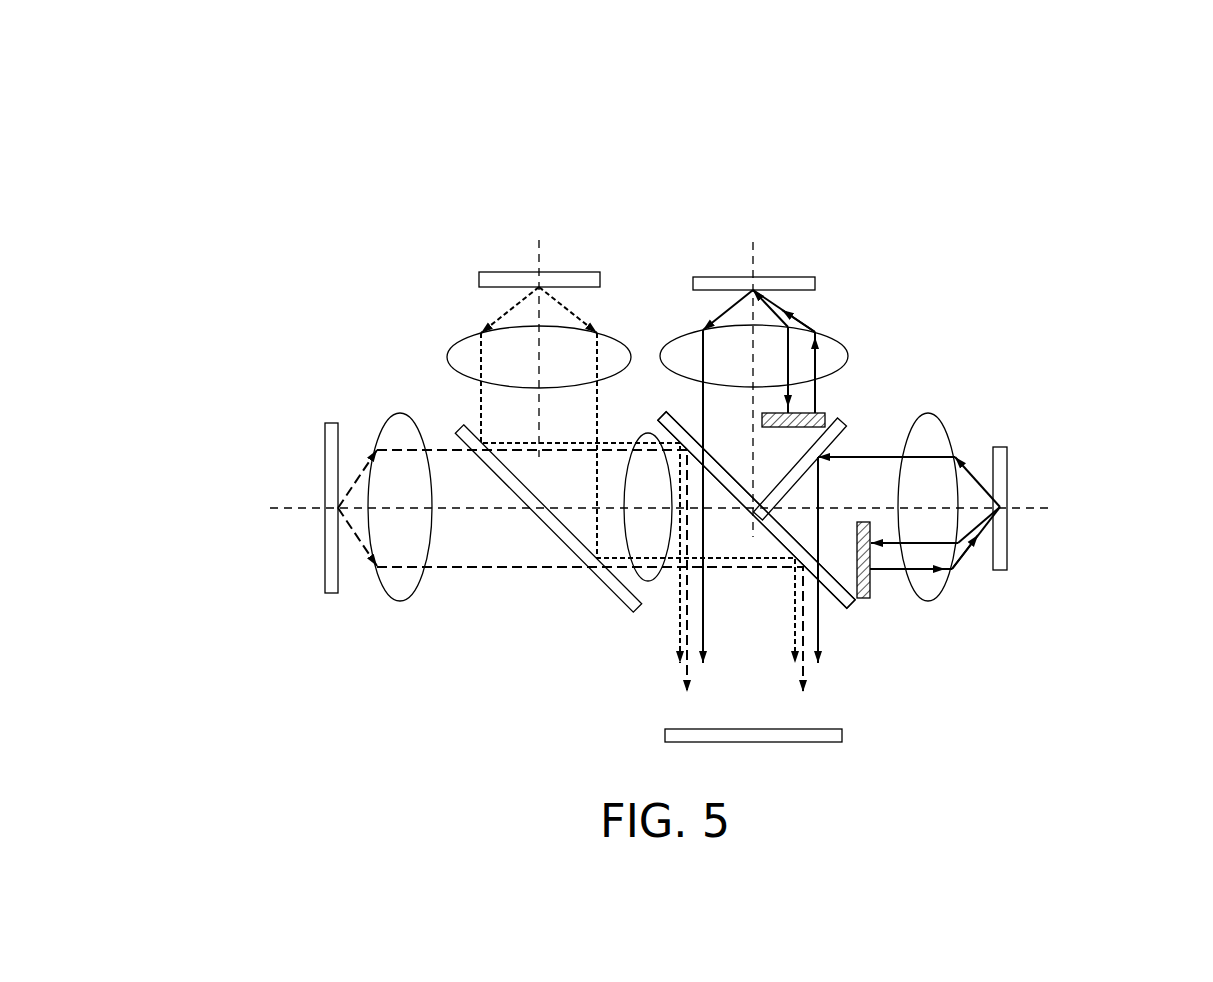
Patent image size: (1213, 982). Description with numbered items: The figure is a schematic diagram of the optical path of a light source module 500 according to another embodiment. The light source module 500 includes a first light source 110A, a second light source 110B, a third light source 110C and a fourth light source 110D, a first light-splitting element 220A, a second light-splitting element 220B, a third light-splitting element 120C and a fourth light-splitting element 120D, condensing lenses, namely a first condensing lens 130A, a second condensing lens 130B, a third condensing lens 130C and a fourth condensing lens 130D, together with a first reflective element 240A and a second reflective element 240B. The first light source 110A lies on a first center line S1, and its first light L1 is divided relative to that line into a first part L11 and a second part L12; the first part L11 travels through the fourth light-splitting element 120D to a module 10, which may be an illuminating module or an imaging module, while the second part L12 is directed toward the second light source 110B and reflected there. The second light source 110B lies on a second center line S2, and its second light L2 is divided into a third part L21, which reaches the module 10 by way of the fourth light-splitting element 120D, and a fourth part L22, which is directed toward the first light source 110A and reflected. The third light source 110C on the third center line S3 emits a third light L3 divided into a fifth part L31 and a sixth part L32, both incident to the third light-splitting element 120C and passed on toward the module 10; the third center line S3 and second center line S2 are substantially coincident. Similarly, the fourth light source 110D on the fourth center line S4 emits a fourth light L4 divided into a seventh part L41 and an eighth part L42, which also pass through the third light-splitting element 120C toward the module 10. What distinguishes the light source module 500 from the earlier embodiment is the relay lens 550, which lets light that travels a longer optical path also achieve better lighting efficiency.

The light source module 500 is at (370, 135).
The module 10 is at (842, 735).
The first light source 110A is at (815, 283).
The second light source 110B is at (1000, 570).
The third light source 110C is at (332, 593).
The fourth light source 110D is at (479, 280).
The first condensing lens 130A is at (848, 356).
The second condensing lens 130B is at (928, 413).
The third condensing lens 130C is at (415, 598).
The fourth condensing lens 130D is at (447, 357).
The third light-splitting element 120C is at (612, 593).
The fourth light-splitting element 120D is at (850, 602).
The first light-splitting element 220A is at (661, 413).
The second light-splitting element 220B is at (840, 423).
The first reflective element 240A is at (823, 413).
The second reflective element 240B is at (862, 598).
The relay lens 550 is at (652, 585).
The first light L1 is at (823, 183).
The first part L11 is at (728, 312).
The second part L12 is at (773, 308).
The second light L2 is at (1150, 462).
The third part L21 is at (1000, 470).
The fourth part L22 is at (1000, 538).
The third light L3 is at (188, 450).
The fifth part L31 is at (360, 545).
The sixth part L32 is at (360, 473).
The fourth light L4 is at (613, 183).
The seventh part L41 is at (517, 304).
The eighth part L42 is at (560, 304).
The first center line S1 is at (754, 375).
The second center line S2 is at (922, 507).
The third center line S3 is at (499, 508).
The fourth center line S4 is at (539, 335).